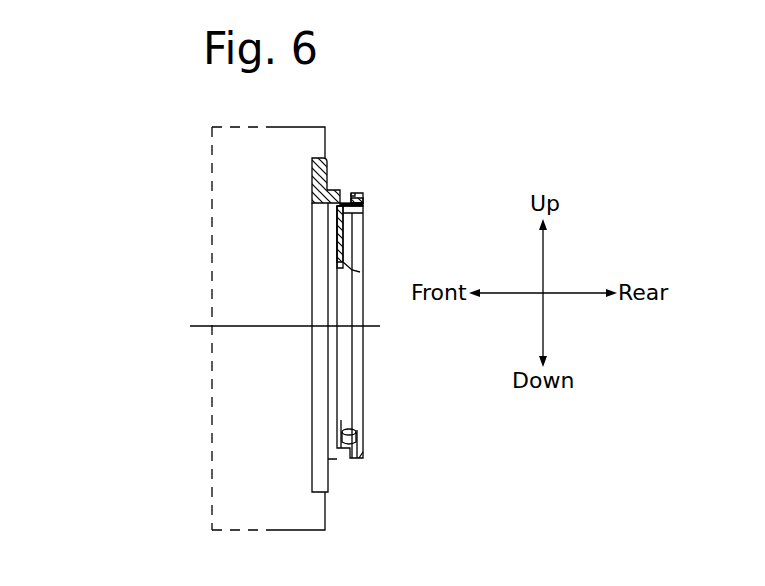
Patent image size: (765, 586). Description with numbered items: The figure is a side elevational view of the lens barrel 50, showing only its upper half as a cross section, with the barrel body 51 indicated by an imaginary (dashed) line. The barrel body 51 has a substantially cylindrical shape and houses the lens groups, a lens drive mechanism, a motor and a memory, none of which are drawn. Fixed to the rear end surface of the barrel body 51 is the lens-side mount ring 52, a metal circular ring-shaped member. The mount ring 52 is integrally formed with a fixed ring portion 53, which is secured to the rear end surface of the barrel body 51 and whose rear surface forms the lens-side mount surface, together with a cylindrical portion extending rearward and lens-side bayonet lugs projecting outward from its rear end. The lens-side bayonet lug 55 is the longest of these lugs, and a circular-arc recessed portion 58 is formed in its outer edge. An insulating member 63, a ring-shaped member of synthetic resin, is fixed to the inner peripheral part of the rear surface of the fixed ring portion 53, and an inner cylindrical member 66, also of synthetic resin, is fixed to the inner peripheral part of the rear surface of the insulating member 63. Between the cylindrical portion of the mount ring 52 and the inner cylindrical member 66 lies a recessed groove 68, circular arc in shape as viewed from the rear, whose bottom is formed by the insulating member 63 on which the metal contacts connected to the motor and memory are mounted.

The lens barrel 50 is at (110, 186).
The barrel body 51 is at (210, 420).
The lens-side mount ring 52 is at (348, 408).
The fixed ring portion 53 is at (329, 163).
The lens-side bayonet lug 55 is at (354, 193).
The recessed portion 58 is at (362, 193).
The insulating member 63 is at (350, 243).
The inner cylindrical member 66 is at (360, 265).
The recessed groove 68 is at (363, 222).